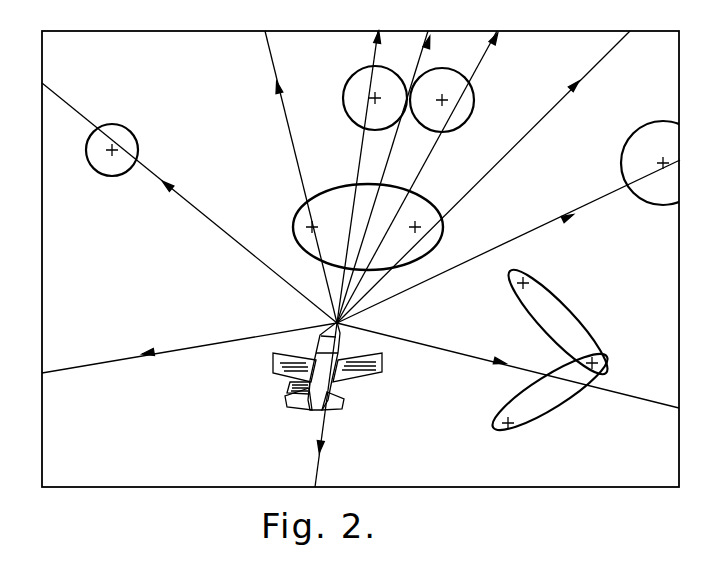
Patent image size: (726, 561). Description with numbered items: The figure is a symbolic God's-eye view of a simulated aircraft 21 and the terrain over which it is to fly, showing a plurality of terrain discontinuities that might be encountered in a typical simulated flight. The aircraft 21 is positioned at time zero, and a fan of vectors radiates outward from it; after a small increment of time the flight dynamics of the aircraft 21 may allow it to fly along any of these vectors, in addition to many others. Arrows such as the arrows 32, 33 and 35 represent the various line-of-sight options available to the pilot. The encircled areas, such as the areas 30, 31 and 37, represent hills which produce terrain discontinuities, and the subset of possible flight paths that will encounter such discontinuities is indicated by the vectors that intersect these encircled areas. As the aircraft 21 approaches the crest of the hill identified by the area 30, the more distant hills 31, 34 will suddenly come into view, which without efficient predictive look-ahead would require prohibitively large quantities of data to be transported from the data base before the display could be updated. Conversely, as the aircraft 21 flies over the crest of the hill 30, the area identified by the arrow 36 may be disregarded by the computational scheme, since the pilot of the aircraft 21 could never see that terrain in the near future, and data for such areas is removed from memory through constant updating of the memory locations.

The simulated aircraft 21 is at (314, 409).
The hill area 30 is at (437, 208).
The distant hill 31 is at (473, 105).
The line-of-sight arrow 32 is at (436, 144).
The line-of-sight arrow 33 is at (362, 148).
The distant hill 34 is at (359, 75).
The line-of-sight arrow 35 is at (310, 155).
The disregarded terrain area 36 is at (478, 317).
The hill area 37 is at (523, 238).